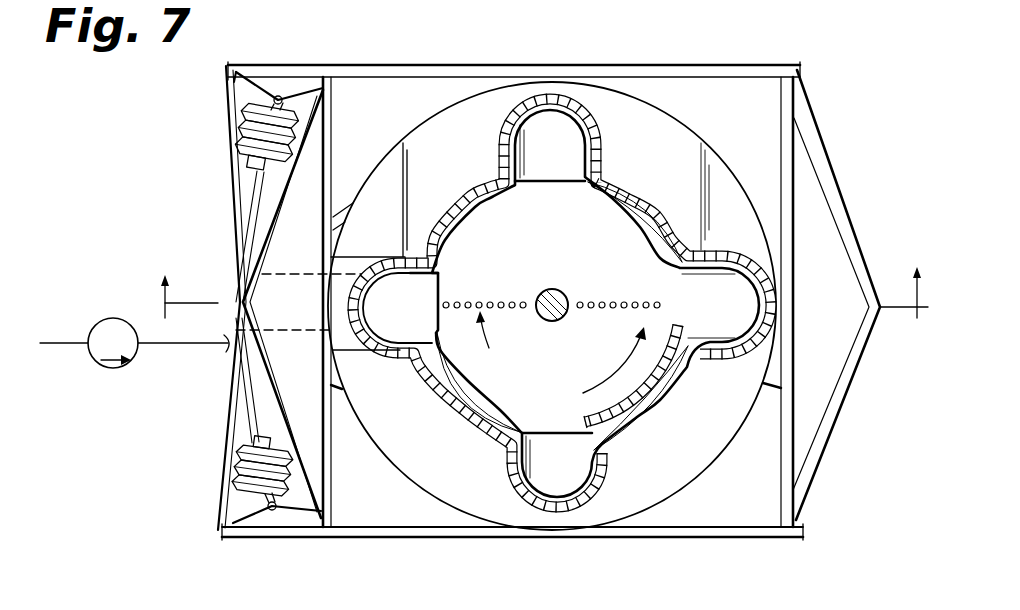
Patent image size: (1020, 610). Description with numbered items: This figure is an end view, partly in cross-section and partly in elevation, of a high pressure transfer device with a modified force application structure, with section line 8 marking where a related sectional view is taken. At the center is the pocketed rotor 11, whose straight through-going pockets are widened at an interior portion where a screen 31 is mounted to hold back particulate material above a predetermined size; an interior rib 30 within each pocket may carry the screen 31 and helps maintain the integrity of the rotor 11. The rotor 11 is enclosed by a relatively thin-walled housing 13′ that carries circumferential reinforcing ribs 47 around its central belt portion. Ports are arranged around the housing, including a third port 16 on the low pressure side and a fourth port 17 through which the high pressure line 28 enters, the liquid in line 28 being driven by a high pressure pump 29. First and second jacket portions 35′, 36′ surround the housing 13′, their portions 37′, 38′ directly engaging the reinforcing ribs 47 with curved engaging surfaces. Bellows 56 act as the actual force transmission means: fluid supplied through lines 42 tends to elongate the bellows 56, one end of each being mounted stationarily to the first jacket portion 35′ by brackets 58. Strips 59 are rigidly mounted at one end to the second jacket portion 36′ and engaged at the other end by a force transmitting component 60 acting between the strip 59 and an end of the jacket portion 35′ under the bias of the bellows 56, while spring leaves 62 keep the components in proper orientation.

The section line 8— 8 is at (542, 286).
The pocketed rotor 11 is at (470, 224).
The thin-walled housing 13′ is at (655, 207).
The third port 16 is at (572, 139).
The fourth port 17 is at (384, 264).
The high pressure line 28 is at (230, 350).
The high pressure pump 29 is at (116, 323).
The interior rib 30 is at (563, 293).
The screen 31 is at (495, 338).
The first jacket portion 35′ is at (331, 144).
The second jacket portion 36′ is at (787, 153).
The portion of first jacket portion 37′ is at (340, 212).
The portion of second jacket portion 38′ is at (781, 230).
The lines 42 is at (250, 208).
The reinforcing ribs 47 is at (710, 164).
The bellows 56 is at (244, 138).
The brackets 58 is at (276, 172).
The strips 59 is at (460, 74).
The force transmitting component 60 is at (276, 76).
The spring leaves 62 is at (229, 106).